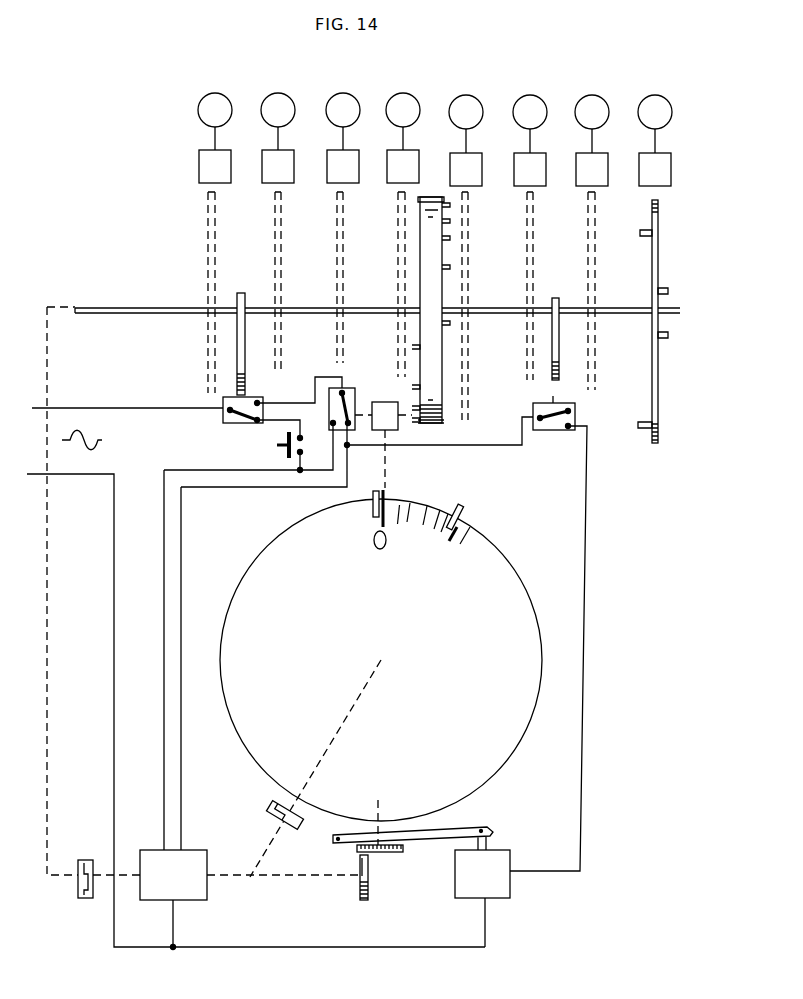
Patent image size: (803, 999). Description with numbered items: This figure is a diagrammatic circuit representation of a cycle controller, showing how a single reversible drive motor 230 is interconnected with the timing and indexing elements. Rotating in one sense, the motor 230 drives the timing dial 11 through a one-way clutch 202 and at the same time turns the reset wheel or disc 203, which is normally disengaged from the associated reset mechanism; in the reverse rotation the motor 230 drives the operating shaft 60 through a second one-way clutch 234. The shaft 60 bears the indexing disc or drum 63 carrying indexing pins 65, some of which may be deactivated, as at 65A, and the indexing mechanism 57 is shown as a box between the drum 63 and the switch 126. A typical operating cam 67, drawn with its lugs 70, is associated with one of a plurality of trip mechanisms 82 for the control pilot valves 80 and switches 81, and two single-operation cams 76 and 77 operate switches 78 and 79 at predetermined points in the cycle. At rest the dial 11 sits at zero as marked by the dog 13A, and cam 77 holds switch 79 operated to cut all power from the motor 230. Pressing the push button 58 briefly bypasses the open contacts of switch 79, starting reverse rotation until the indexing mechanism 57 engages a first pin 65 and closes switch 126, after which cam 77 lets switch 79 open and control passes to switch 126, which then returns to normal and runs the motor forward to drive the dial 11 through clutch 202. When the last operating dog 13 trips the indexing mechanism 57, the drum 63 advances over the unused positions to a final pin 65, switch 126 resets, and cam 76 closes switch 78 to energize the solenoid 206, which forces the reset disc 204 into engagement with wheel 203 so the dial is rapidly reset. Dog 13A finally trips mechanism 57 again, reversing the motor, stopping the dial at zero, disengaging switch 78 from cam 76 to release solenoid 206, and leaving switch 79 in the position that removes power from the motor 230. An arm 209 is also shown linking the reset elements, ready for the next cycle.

The control pilot valve 80 is at (220, 102).
The switch 81 is at (471, 104).
The trip mechanism 82 is at (222, 160).
The operating shaft 60 is at (305, 307).
The single-operation cam 77 is at (245, 345).
The disc 63 is at (436, 292).
The deactivated index pin 65A is at (450, 222).
The indexing pin 65 is at (412, 347).
The single-operation cam 76 is at (559, 372).
The operating cam 67 is at (657, 280).
The cam lug 70 is at (645, 236).
The cam switch 79 is at (227, 424).
The push button 58 is at (276, 445).
The switch 126 is at (346, 391).
The indexing mechanism 57 is at (386, 402).
The switch 78 is at (576, 413).
The timing dial 11 is at (381, 660).
The dog 13A is at (372, 510).
The operating dog 13 is at (462, 513).
The one-way clutch 202 is at (268, 809).
The arm 209 is at (456, 830).
The reset disc 204 is at (392, 852).
The reset wheel 203 is at (368, 881).
The one-way clutch 234 is at (85, 860).
The drive motor 230 is at (207, 890).
The solenoid 206 is at (508, 890).